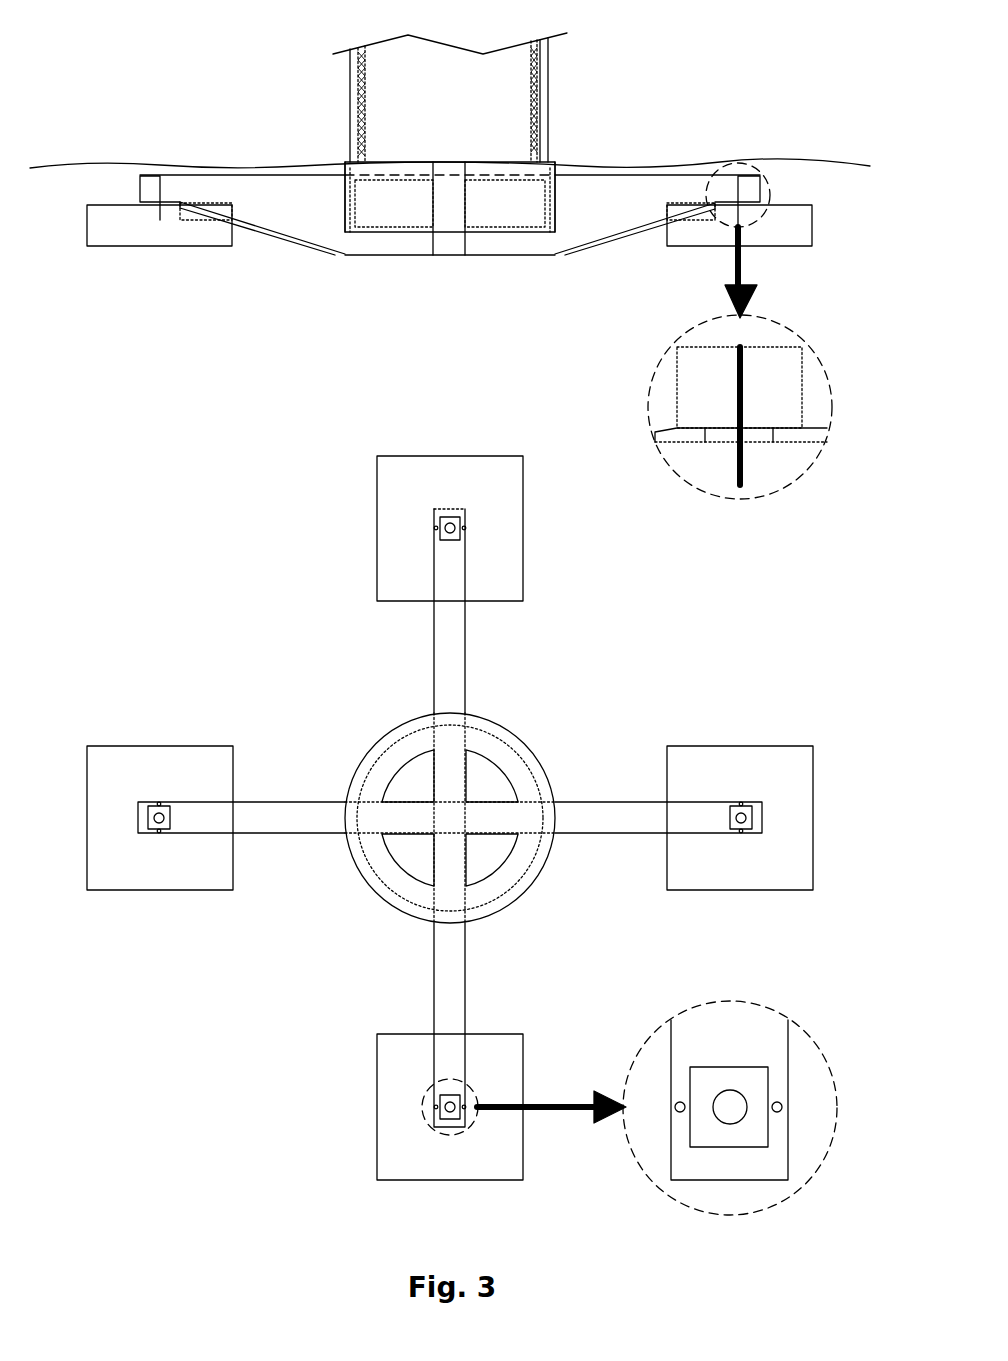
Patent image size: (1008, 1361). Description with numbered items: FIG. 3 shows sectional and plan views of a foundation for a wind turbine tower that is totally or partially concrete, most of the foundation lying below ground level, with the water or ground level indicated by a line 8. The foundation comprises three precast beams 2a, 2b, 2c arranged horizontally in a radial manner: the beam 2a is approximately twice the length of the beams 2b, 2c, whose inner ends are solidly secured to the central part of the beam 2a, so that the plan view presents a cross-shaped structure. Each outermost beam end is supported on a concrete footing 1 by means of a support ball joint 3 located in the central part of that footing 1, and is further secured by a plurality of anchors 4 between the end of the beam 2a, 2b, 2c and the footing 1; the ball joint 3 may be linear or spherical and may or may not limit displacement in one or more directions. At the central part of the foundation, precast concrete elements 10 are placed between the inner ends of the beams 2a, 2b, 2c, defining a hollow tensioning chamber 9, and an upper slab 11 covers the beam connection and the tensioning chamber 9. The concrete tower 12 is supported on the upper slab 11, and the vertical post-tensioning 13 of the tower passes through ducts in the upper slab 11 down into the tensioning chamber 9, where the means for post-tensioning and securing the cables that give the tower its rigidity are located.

The concrete footing 1 is at (115, 220).
The precast beam 2a is at (282, 213).
The precast beam 2b is at (448, 225).
The precast beam 2c is at (450, 650).
The support ball joint 3 is at (758, 435).
The anchor 4 is at (745, 465).
The water surface 8 is at (60, 190).
The tensioning chamber 9 is at (397, 198).
The precast concrete element 10 is at (352, 207).
The upper slab 11 is at (543, 172).
The concrete tower 12 is at (545, 73).
The vertical post-tensioning 13 is at (365, 112).